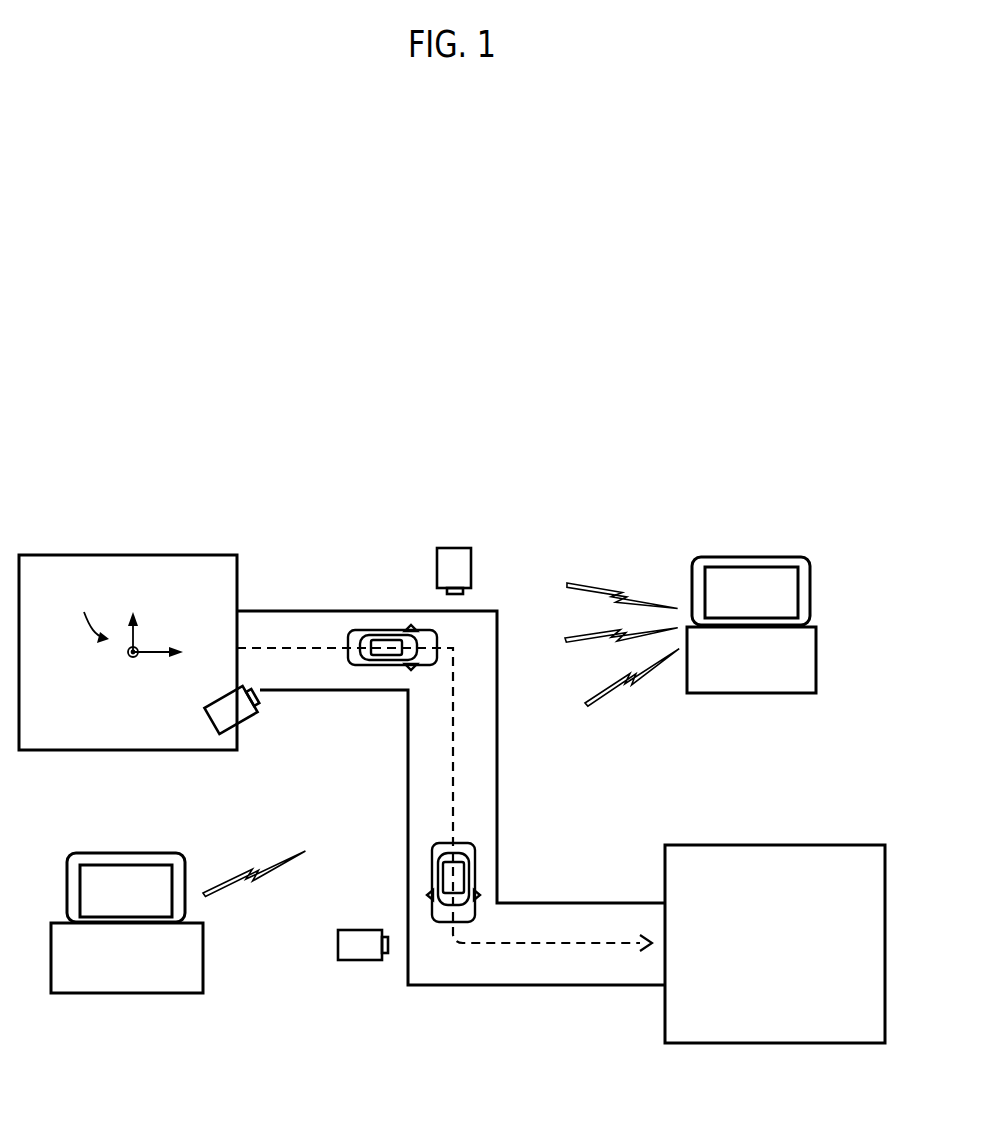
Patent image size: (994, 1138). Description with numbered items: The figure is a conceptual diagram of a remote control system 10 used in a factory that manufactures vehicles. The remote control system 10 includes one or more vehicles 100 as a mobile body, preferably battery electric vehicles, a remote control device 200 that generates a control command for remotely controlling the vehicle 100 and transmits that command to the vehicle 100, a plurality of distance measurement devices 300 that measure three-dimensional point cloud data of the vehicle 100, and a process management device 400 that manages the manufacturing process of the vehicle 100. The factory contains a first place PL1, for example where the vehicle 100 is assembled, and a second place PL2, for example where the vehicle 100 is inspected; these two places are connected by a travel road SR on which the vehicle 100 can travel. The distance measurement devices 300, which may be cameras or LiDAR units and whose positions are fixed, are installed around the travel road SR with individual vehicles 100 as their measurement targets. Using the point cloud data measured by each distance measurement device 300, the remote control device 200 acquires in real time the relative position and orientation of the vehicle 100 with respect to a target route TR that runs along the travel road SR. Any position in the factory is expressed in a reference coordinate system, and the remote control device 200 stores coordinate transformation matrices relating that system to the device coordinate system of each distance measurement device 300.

The remote control system 10 is at (890, 464).
The vehicle 100 is at (383, 630).
The remote control device 200 is at (736, 557).
The distance measurement device 300 is at (449, 548).
The process management device 400 is at (110, 853).
The first place PL1 is at (133, 555).
The second place PL2 is at (758, 845).
The target route TR is at (457, 744).
The travel road SR is at (497, 780).